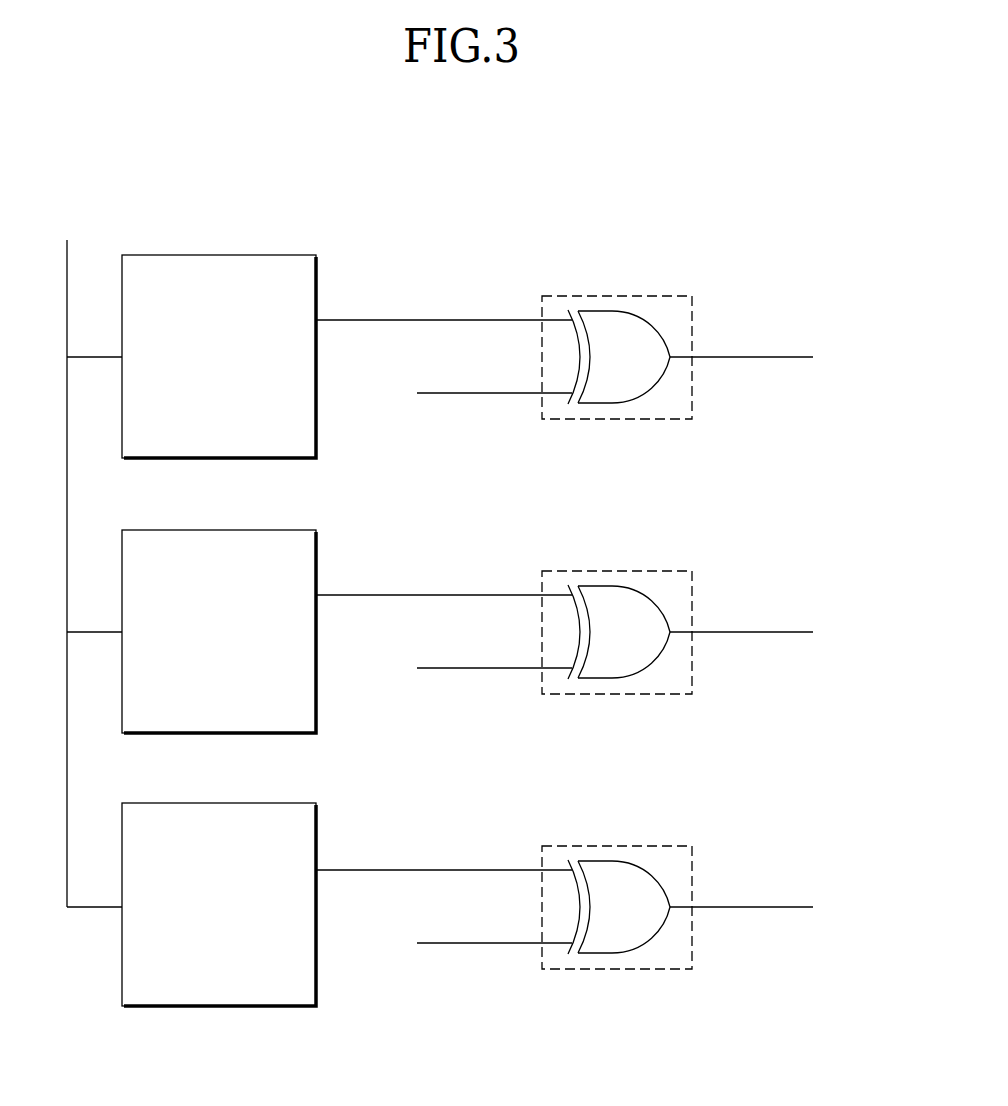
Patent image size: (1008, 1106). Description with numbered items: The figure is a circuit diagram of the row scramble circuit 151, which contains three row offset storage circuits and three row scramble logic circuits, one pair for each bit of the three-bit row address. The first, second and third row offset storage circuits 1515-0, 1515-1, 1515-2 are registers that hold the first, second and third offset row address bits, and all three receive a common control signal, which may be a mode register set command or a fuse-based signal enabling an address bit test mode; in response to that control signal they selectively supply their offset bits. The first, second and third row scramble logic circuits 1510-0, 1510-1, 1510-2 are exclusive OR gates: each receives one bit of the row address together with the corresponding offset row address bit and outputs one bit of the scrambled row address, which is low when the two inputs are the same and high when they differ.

The row scramble circuit 151 is at (112, 160).
The first row offset storage circuit 1515-0 is at (302, 238).
The second row offset storage circuit 1515-1 is at (302, 513).
The third row offset storage circuit 1515-2 is at (302, 786).
The first row scramble logic circuit 1510-0 is at (683, 277).
The second row scramble logic circuit 1510-1 is at (683, 552).
The third row scramble logic circuit 1510-2 is at (683, 827).